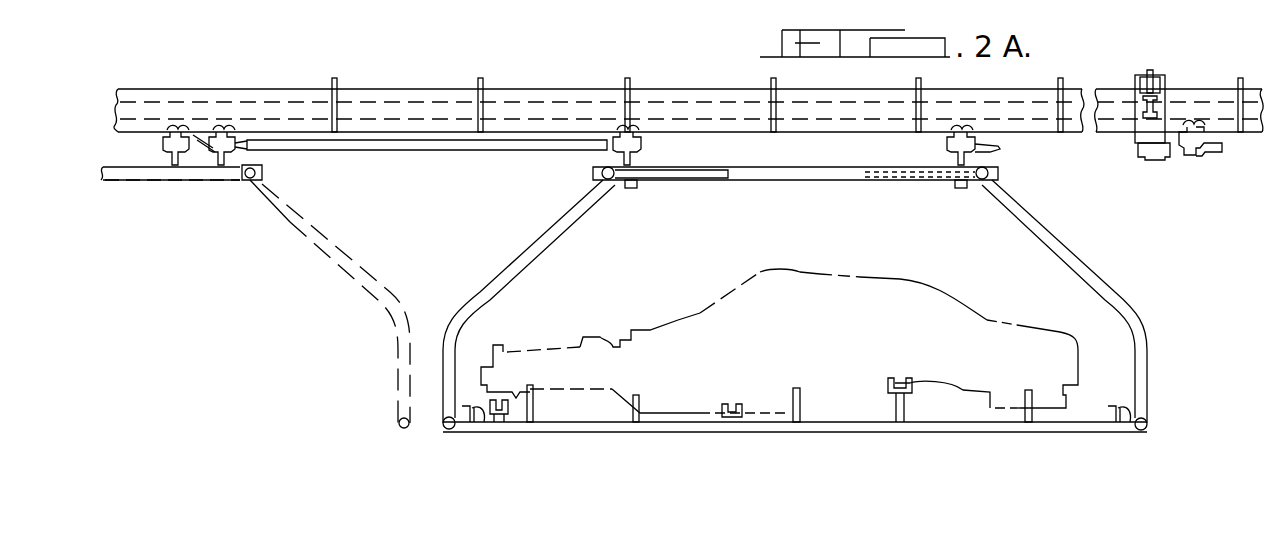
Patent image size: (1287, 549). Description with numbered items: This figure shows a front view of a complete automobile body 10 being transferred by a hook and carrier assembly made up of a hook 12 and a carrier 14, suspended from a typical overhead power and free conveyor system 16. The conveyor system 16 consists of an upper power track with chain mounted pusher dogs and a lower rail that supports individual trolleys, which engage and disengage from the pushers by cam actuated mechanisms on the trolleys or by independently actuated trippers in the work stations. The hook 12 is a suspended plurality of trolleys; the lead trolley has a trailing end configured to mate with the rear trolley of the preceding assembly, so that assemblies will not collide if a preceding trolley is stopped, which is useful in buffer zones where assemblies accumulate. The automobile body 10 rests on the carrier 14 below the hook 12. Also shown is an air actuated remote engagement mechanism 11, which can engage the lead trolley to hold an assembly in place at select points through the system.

The overhead power and free conveyor system 16 is at (383, 78).
The air actuated remote engagement mechanism 11 is at (1135, 163).
The hook 12 is at (506, 267).
The carrier 14 is at (723, 433).
The automobile body 10 is at (920, 302).